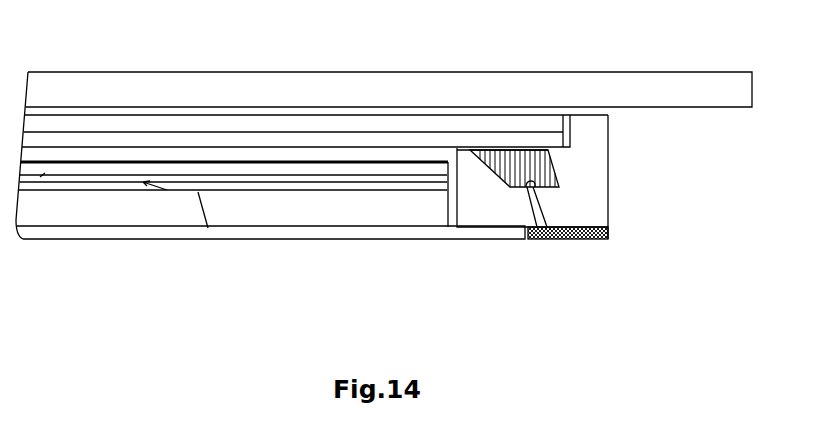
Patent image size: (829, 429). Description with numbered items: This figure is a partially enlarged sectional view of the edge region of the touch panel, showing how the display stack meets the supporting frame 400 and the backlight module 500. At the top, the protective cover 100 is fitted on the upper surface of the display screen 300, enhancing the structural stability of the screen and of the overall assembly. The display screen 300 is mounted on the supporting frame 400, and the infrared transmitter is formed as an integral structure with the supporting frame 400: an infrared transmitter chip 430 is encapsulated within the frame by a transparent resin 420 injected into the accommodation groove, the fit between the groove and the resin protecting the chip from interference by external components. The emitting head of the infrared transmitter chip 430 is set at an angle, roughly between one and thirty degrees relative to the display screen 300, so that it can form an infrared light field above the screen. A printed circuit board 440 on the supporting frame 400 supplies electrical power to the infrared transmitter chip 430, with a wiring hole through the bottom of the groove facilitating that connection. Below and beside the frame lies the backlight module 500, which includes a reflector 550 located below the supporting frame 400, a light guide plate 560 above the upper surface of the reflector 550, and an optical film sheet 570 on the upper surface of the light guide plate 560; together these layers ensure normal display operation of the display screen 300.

The protective cover 100 is at (542, 85).
The display screen 300 is at (558, 118).
The supporting frame 400 is at (583, 162).
The transparent resin 420 is at (547, 172).
The infrared transmitter chip 430 is at (545, 182).
The printed circuit board 440 is at (595, 240).
The backlight module 500 is at (367, 287).
The reflector 550 is at (268, 236).
The light guide plate 560 is at (307, 212).
The optical film sheet 570 is at (388, 175).